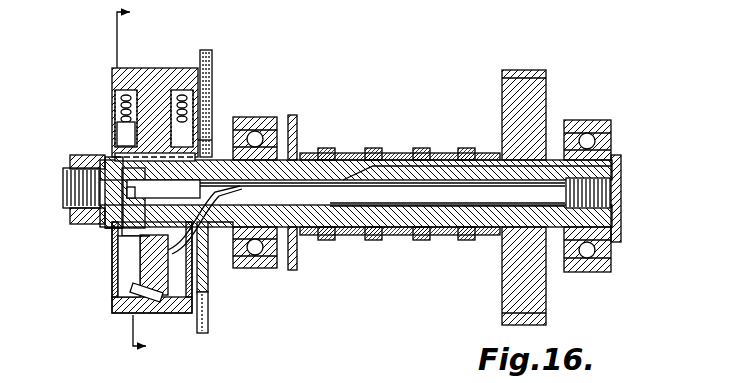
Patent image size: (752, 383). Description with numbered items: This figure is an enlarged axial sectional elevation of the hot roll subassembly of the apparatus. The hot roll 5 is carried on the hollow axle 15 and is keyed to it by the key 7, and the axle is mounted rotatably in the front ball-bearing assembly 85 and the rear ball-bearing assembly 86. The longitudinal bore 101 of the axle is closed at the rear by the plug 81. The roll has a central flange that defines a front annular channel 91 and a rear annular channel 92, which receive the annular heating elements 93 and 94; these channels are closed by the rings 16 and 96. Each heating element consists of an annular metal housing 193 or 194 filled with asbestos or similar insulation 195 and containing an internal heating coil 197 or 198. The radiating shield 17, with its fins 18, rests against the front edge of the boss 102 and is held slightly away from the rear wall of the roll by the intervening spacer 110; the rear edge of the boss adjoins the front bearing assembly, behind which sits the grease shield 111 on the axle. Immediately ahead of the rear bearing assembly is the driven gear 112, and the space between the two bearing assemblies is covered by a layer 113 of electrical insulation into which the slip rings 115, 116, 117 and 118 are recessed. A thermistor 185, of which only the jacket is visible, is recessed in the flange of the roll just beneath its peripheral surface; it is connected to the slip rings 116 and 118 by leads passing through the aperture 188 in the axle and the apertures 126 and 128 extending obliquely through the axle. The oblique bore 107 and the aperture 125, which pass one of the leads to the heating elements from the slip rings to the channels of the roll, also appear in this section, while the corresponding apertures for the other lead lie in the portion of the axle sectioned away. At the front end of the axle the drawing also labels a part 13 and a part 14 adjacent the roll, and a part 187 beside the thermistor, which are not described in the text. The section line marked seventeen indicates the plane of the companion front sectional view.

The hot roll 5 is at (118, 312).
The key 7 is at (107, 157).
The collar 13 is at (72, 220).
The flange 14 is at (106, 229).
The axle 15 is at (65, 190).
The ring 16 is at (115, 110).
The radiating shield 17 is at (205, 100).
The fins 18 is at (209, 52).
The plug 81 is at (621, 192).
The front ball-bearing assembly 85 is at (259, 268).
The rear ball-bearing assembly 86 is at (612, 262).
The front annular channel 91 is at (128, 292).
The rear annular channel 92 is at (182, 136).
The annular heating element 93 is at (122, 130).
The annular heating element 94 is at (207, 125).
The ring 96 is at (206, 118).
The longitudinal bore 101 is at (483, 240).
The boss 102 is at (216, 260).
The oblique bore 107 is at (203, 192).
The spacer 110 is at (206, 232).
The grease shield 111 is at (296, 120).
The driven gear 112 is at (545, 100).
The layer of electrical insulation 113 is at (440, 240).
The slip ring 115 is at (330, 150).
The slip ring 116 is at (377, 152).
The slip ring 117 is at (424, 150).
The slip ring 118 is at (470, 150).
The aperture 125 is at (300, 238).
The oblique aperture 126 is at (400, 190).
The aperture 128 is at (470, 205).
The thermistor 185 is at (155, 300).
The block 187 is at (140, 245).
The aperture 188 is at (163, 189).
The annular metal housing 193 is at (150, 68).
The annular metal housing 194 is at (192, 68).
The insulation 195 is at (127, 92).
The heating coil 197 is at (119, 100).
The heating coil 198 is at (207, 90).